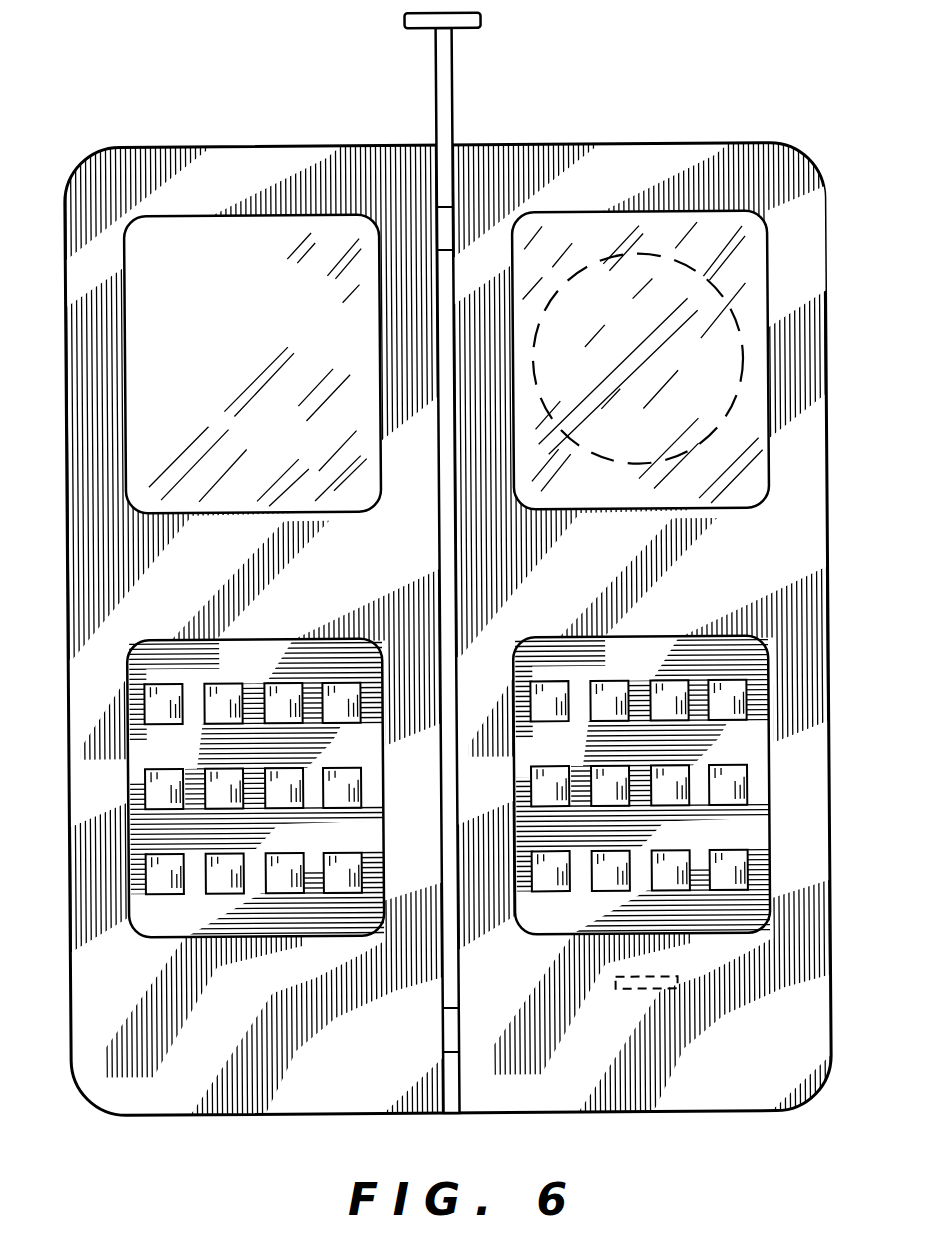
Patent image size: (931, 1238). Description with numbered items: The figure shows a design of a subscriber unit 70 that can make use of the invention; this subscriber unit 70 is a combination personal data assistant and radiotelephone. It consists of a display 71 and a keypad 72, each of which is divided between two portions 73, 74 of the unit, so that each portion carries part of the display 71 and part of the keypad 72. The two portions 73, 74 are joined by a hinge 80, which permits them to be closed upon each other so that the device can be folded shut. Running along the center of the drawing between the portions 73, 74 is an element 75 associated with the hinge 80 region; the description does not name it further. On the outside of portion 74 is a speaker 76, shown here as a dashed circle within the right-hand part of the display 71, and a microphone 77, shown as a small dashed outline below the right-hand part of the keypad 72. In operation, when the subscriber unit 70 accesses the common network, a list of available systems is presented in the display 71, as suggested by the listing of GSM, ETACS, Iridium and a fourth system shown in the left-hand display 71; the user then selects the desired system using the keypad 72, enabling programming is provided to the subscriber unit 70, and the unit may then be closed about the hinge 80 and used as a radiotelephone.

The subscriber unit 70 is at (645, 68).
The display 71 is at (383, 484).
The keypad 72 is at (384, 836).
The first portion 73 is at (226, 1084).
The second portion 74 is at (613, 1082).
The antenna 75 is at (484, 99).
The speaker 76 is at (618, 462).
The microphone 77 is at (676, 989).
The hinge 80 is at (443, 1024).